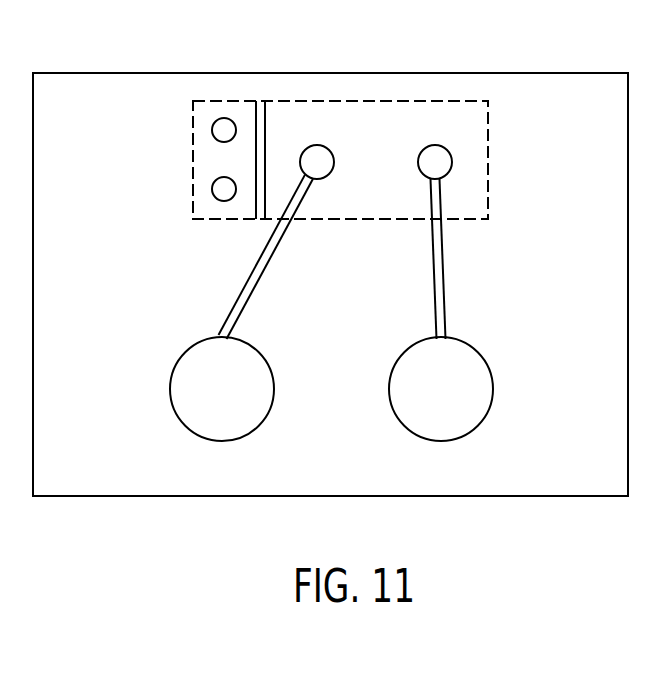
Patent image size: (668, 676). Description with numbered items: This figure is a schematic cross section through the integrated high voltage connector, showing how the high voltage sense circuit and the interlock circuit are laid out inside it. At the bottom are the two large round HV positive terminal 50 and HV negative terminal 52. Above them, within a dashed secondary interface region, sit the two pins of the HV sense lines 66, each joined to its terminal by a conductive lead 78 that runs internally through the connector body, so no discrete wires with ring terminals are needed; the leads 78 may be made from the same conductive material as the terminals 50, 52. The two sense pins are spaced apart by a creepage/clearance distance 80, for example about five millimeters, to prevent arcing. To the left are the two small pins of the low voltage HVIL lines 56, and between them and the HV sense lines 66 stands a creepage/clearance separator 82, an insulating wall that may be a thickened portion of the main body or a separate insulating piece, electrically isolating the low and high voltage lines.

The HV positive terminal 50 is at (187, 393).
The HV negative terminal 52 is at (407, 392).
The HVIL lines 56 is at (212, 133).
The HV sense lines 66 is at (433, 162).
The conductive leads 78 is at (241, 294).
The creepage/clearance distance 80 is at (317, 10).
The creepage/clearance separator 82 is at (252, 125).